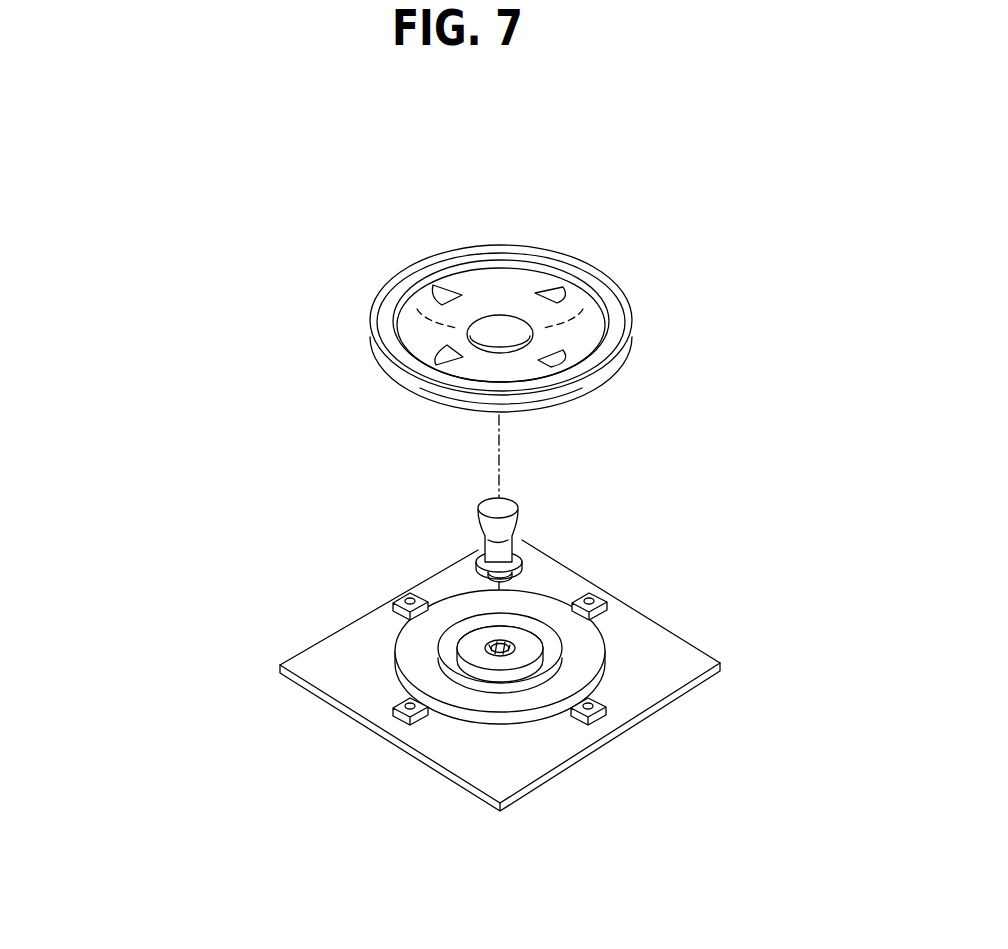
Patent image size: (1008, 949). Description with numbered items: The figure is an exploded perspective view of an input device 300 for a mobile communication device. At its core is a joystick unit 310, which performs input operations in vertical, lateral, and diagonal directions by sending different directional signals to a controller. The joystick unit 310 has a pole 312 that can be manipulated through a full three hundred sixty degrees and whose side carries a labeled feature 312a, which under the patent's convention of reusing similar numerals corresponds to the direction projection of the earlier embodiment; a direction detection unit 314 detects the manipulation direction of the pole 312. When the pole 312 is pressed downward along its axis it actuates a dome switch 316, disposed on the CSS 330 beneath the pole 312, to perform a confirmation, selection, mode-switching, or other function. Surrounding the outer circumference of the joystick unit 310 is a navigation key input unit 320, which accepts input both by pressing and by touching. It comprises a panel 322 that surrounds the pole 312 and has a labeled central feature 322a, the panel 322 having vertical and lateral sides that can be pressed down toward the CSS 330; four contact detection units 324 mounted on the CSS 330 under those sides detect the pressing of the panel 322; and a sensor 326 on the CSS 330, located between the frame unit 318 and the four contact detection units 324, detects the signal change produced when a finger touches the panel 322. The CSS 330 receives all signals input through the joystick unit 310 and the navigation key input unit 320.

The input device 300 is at (852, 164).
The joystick unit 310 is at (665, 475).
The pole 312 is at (532, 518).
The shaft neck portion 312a is at (477, 556).
The direction detection unit 314 is at (513, 647).
The dome switch 316 is at (510, 640).
The frame unit 318 is at (528, 648).
The navigation key input unit 320 is at (132, 467).
The panel 322 is at (392, 378).
The center hole of dial disk 322a is at (505, 336).
The contact detection units 324 is at (393, 605).
The sensor 326 is at (407, 667).
The CSS 330 is at (660, 682).